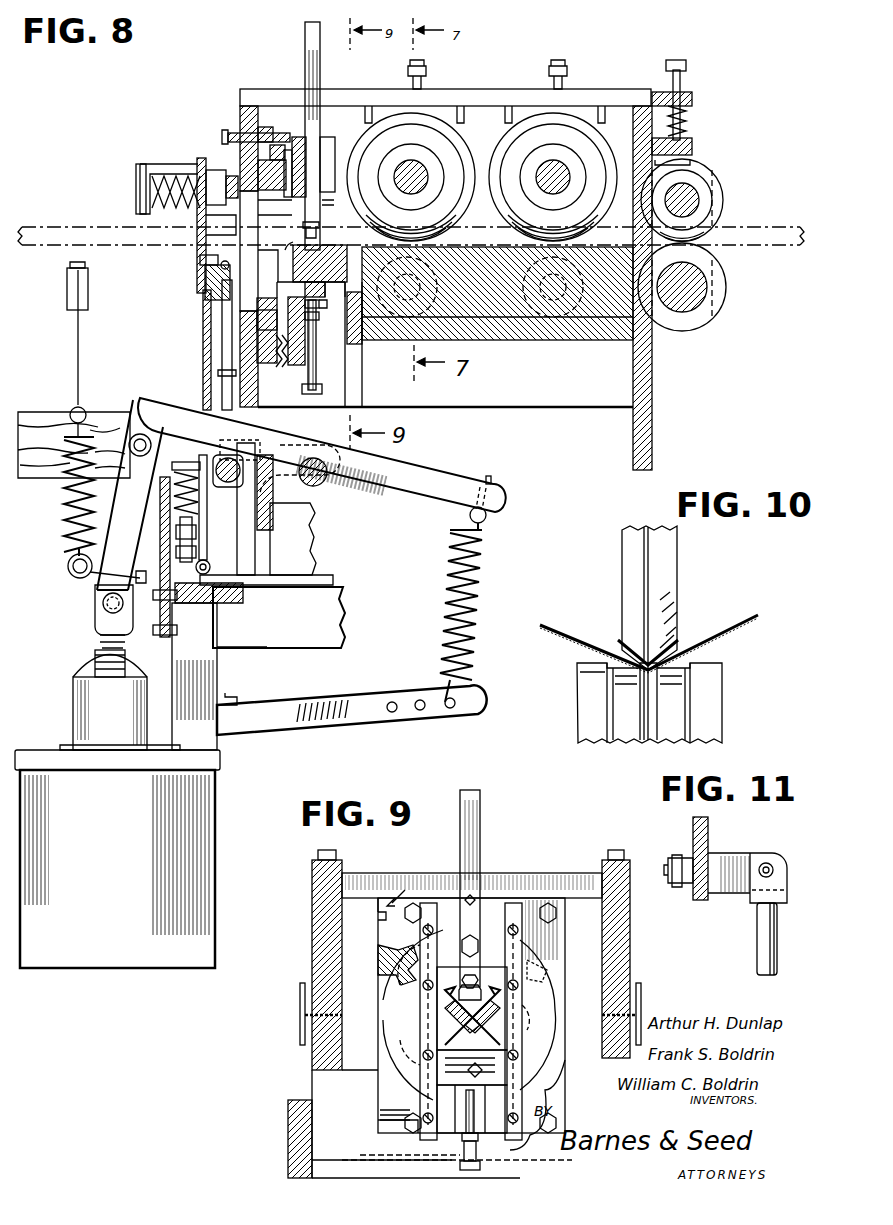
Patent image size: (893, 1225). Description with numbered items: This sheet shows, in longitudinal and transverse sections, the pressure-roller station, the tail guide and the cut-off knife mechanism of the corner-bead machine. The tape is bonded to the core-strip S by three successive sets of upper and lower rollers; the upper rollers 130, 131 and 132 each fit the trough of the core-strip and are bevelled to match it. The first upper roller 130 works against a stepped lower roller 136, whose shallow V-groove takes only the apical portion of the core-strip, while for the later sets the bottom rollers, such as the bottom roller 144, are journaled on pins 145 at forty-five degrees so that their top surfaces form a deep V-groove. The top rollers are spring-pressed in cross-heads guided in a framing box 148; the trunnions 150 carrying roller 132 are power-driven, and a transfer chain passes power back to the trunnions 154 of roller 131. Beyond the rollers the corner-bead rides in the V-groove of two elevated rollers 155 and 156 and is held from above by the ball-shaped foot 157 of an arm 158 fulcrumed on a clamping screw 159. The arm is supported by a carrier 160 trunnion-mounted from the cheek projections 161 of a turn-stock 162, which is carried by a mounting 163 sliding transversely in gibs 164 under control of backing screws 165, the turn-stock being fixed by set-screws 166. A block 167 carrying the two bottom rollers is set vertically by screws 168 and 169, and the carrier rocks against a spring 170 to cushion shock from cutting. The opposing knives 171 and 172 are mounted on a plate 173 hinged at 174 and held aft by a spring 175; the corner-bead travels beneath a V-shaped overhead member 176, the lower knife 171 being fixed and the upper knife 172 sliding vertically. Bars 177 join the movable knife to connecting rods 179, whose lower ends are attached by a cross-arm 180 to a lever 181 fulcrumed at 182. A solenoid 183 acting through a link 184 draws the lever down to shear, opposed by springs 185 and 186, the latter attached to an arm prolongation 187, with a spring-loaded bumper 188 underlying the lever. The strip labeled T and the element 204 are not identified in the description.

In FIG. 8, the upper roller 130 is at (705, 188).
In FIG. 10, the upper roller 130 is at (677, 560).
In FIG. 8, the upper roller 131 is at (530, 118).
In FIG. 8, the upper roller 132 is at (418, 115).
In FIG. 8, the lower roller 136 is at (712, 312).
In FIG. 10, the lower roller 136 is at (712, 718).
In FIG. 8, the bottom roller 144 is at (506, 252).
In FIG. 8, the pins 145 is at (552, 330).
In FIG. 8, the framing box 148 is at (268, 88).
In FIG. 9, the framing box 148 is at (310, 898).
In FIG. 8, the trunnions 150 is at (421, 168).
In FIG. 8, the trunnions 154 is at (561, 168).
In FIG. 9, the roller 155 is at (405, 1047).
In FIG. 8, the roller 156 is at (322, 244).
In FIG. 9, the roller 156 is at (492, 1005).
In FIG. 8, the ball-shaped foot 157 is at (318, 230).
In FIG. 9, the ball-shaped foot 157 is at (480, 995).
In FIG. 8, the arm 158 is at (305, 40).
In FIG. 9, the arm 158 is at (480, 852).
In FIG. 8, the clamping screw 159 is at (330, 170).
In FIG. 9, the clamping screw 159 is at (478, 948).
In FIG. 8, the carrier 160 is at (300, 148).
In FIG. 9, the carrier 160 is at (496, 910).
In FIG. 9, the cheek projections 161 is at (400, 1024).
In FIG. 8, the turn-stock 162 is at (268, 298).
In FIG. 9, the turn-stock 162 is at (420, 1065).
In FIG. 8, the mounting 163 is at (257, 322).
In FIG. 9, the mounting 163 is at (390, 1098).
In FIG. 8, the gibs 164 is at (284, 362).
In FIG. 9, the gibs 164 is at (568, 910).
In FIG. 9, the backing screws 165 is at (300, 1018).
In FIG. 9, the set-screws 166 is at (385, 978).
In FIG. 8, the block 167 is at (325, 302).
In FIG. 9, the block 167 is at (458, 1092).
In FIG. 8, the screw 168 is at (320, 316).
In FIG. 9, the screw 168 is at (476, 1078).
In FIG. 8, the screw 169 is at (318, 388).
In FIG. 9, the screw 169 is at (480, 1165).
In FIG. 8, the spring 170 is at (284, 372).
In FIG. 8, the lower knife 171 is at (216, 261).
In FIG. 8, the upper knife 172 is at (200, 238).
In FIG. 11, the upper knife 172 is at (693, 828).
In FIG. 8, the plate 173 is at (203, 328).
In FIG. 8, the hinge 174 is at (208, 565).
In FIG. 8, the spring 175 is at (168, 172).
In FIG. 8, the V-shaped overhead member 176 is at (230, 147).
In FIG. 11, the bars 177 is at (745, 853).
In FIG. 8, the connecting rods 179 is at (222, 350).
In FIG. 11, the connecting rods 179 is at (757, 953).
In FIG. 8, the cross-arm 180 is at (228, 487).
In FIG. 8, the lever 181 is at (310, 445).
In FIG. 8, the fulcrum 182 is at (322, 486).
In FIG. 8, the solenoid 183 is at (220, 822).
In FIG. 8, the link 184 is at (95, 588).
In FIG. 8, the spring 185 is at (66, 526).
In FIG. 8, the spring 186 is at (484, 580).
In FIG. 8, the arm prolongation 187 is at (445, 480).
In FIG. 8, the spring-loaded bumper 188 is at (185, 504).
In FIG. 8, the rod anchor 204 is at (40, 412).
In FIG. 8, the strip T is at (790, 226).
In FIG. 10, the strip T is at (728, 622).
In FIG. 10, the core-strip S is at (685, 637).